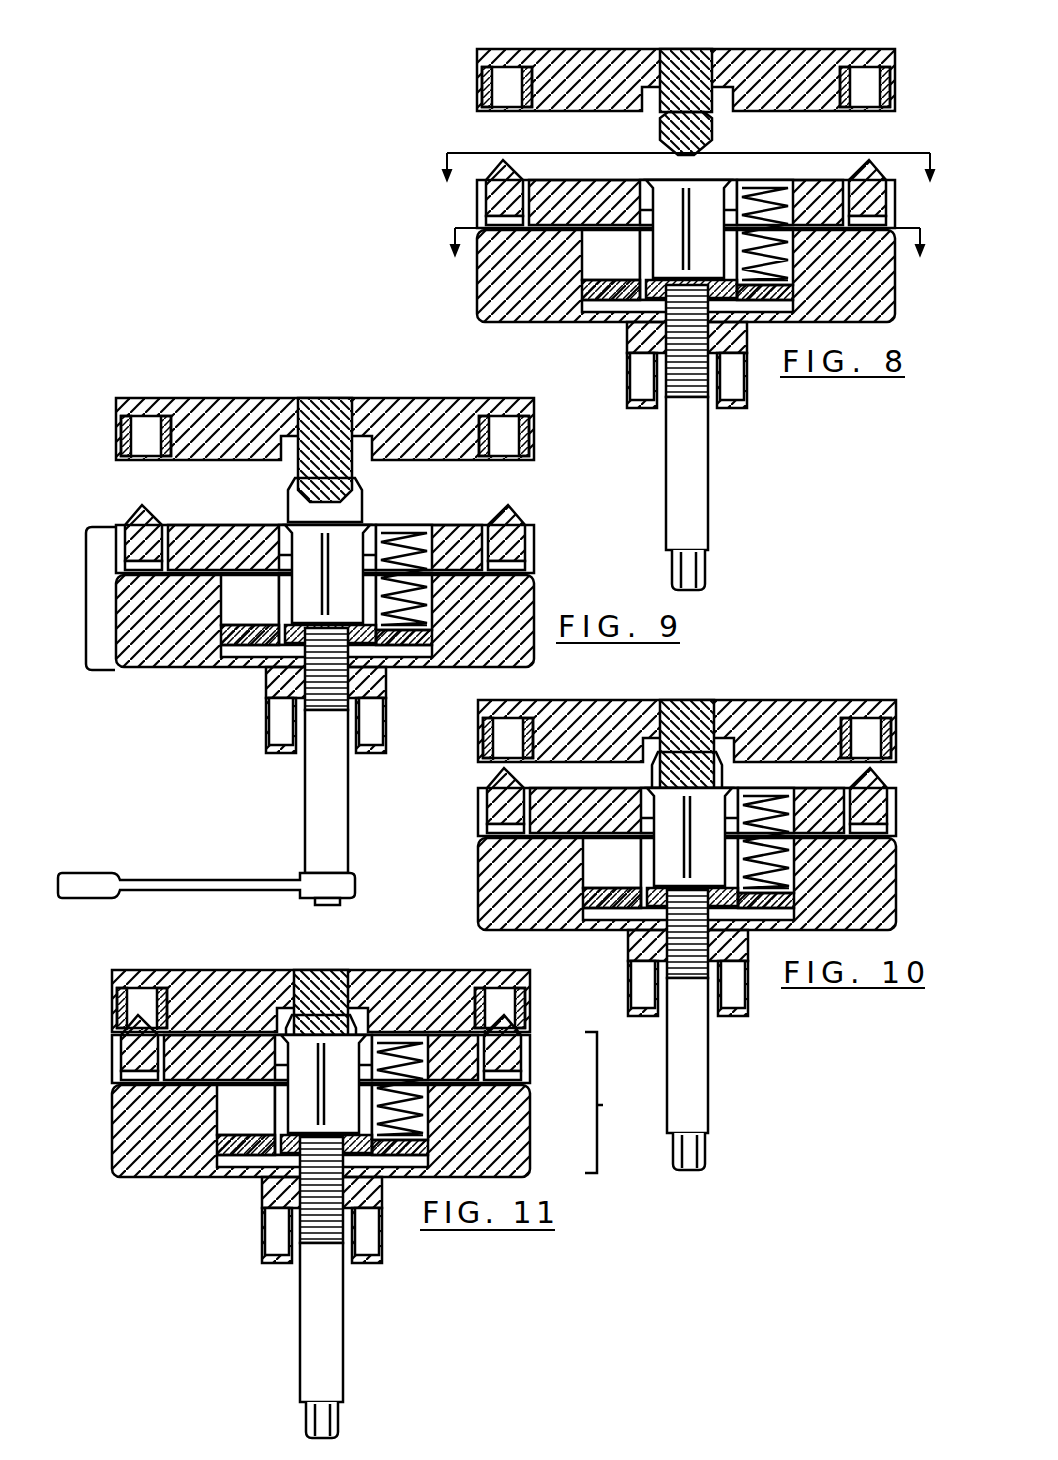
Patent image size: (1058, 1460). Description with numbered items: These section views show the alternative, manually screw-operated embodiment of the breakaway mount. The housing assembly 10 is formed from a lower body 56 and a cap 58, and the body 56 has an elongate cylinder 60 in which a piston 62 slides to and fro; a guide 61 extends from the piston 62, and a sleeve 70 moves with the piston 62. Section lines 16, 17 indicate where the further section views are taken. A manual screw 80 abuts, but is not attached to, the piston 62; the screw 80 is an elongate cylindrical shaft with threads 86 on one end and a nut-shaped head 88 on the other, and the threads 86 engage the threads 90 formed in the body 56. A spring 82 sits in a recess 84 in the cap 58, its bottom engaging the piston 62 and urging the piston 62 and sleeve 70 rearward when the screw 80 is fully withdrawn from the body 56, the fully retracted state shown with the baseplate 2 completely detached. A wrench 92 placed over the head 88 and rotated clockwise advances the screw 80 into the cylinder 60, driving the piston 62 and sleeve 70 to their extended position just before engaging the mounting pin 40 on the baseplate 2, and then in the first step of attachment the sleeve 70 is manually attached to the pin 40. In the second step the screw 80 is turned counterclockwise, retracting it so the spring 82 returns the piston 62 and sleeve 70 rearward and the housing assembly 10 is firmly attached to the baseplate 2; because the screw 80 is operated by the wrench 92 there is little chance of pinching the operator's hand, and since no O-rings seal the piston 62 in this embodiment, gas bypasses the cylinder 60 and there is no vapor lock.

In FIG. 8, the baseplate 2 is at (686, 80).
In FIG. 9, the baseplate 2 is at (325, 429).
In FIG. 10, the baseplate 2 is at (793, 720).
In FIG. 11, the baseplate 2 is at (142, 972).
In FIG. 9, the housing assembly 10 is at (86, 597).
In FIG. 11, the housing assembly 10 is at (614, 1102).
In FIG. 8, the section line 16 is at (689, 260).
In FIG. 8, the section line 17 is at (688, 185).
In FIG. 8, the mounting pin 40 is at (686, 102).
In FIG. 9, the mounting pin 40 is at (325, 450).
In FIG. 10, the mounting pin 40 is at (690, 740).
In FIG. 11, the mounting pin 40 is at (321, 1025).
In FIG. 8, the lower body 56 is at (500, 290).
In FIG. 9, the lower body 56 is at (325, 621).
In FIG. 10, the lower body 56 is at (687, 884).
In FIG. 11, the lower body 56 is at (513, 1133).
In FIG. 8, the cap 58 is at (585, 195).
In FIG. 9, the cap 58 is at (325, 539).
In FIG. 10, the cap 58 is at (687, 802).
In FIG. 11, the cap 58 is at (532, 1060).
In FIG. 8, the cylinder 60 is at (687, 365).
In FIG. 9, the cylinder 60 is at (415, 645).
In FIG. 10, the cylinder 60 is at (688, 973).
In FIG. 11, the cylinder 60 is at (322, 1220).
In FIG. 8, the guide 61 is at (635, 245).
In FIG. 9, the guide 61 is at (327, 574).
In FIG. 10, the guide 61 is at (689, 837).
In FIG. 11, the guide 61 is at (323, 1084).
In FIG. 8, the piston 62 is at (612, 305).
In FIG. 9, the piston 62 is at (258, 640).
In FIG. 10, the piston 62 is at (688, 898).
In FIG. 11, the piston 62 is at (243, 1170).
In FIG. 9, the sleeve 70 is at (360, 495).
In FIG. 10, the sleeve 70 is at (716, 770).
In FIG. 11, the sleeve 70 is at (321, 1035).
In FIG. 8, the manual screw 80 is at (697, 482).
In FIG. 9, the manual screw 80 is at (320, 803).
In FIG. 10, the manual screw 80 is at (687, 1055).
In FIG. 11, the manual screw 80 is at (313, 1318).
In FIG. 8, the spring 82 is at (782, 255).
In FIG. 9, the spring 82 is at (404, 579).
In FIG. 10, the spring 82 is at (766, 842).
In FIG. 11, the spring 82 is at (400, 1089).
In FIG. 8, the recess 84 is at (767, 182).
In FIG. 8, the threads 86 is at (690, 380).
In FIG. 9, the threads 86 is at (326, 669).
In FIG. 10, the threads 86 is at (687, 934).
In FIG. 11, the threads 86 is at (321, 1190).
In FIG. 8, the nut-shaped head 88 is at (682, 573).
In FIG. 9, the nut-shaped head 88 is at (333, 923).
In FIG. 10, the nut-shaped head 88 is at (689, 1151).
In FIG. 11, the nut-shaped head 88 is at (322, 1420).
In FIG. 8, the threads 90 is at (718, 333).
In FIG. 9, the wrench 92 is at (187, 887).